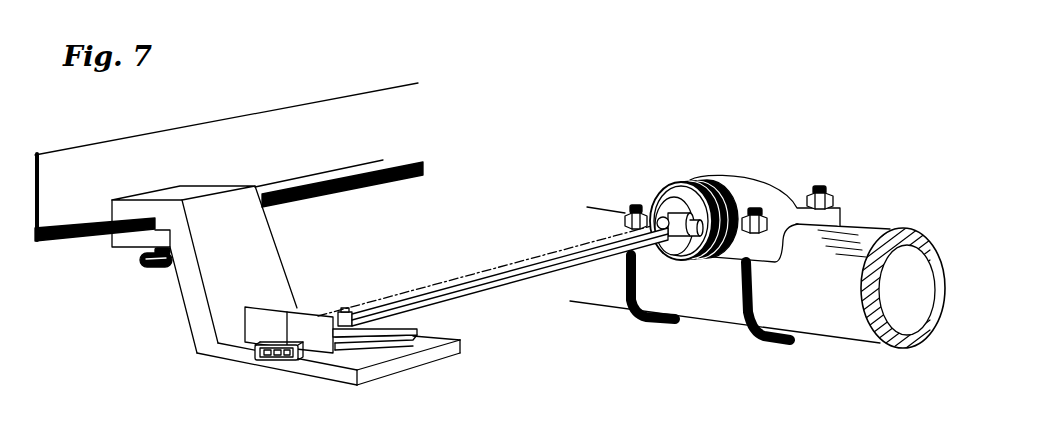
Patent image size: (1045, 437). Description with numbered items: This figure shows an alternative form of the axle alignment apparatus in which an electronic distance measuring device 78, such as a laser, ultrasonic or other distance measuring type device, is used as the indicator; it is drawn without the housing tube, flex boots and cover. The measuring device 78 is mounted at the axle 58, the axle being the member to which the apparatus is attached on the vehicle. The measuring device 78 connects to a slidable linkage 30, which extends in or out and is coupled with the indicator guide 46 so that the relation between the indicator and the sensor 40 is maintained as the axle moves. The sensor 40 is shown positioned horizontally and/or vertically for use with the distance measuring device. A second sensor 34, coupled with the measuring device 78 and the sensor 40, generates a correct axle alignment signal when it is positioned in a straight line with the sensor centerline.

The slidable linkage 30 is at (511, 276).
The sensor 34 is at (342, 310).
The sensor 40 is at (343, 348).
The indicator guide 46 is at (382, 318).
The axle 58 is at (870, 340).
The electronic distance measuring device 78 is at (658, 198).